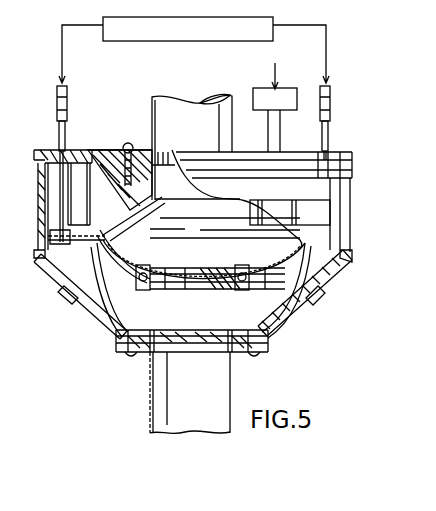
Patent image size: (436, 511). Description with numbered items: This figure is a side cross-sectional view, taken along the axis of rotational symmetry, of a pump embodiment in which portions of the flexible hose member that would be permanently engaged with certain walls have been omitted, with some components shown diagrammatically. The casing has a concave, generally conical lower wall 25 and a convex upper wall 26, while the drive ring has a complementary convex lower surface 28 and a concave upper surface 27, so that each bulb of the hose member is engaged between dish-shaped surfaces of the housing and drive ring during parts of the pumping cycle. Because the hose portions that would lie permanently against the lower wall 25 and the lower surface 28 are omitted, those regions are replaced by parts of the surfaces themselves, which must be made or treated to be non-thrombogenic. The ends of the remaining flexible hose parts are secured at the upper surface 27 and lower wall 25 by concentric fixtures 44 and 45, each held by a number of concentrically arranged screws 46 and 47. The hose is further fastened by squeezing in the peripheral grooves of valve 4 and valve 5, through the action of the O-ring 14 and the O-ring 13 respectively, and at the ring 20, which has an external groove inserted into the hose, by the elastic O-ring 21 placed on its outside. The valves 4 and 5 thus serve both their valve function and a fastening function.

The valve 4 is at (210, 282).
The valve 5 is at (170, 355).
The O-ring 13 is at (141, 353).
The O-ring 14 is at (147, 283).
The ring 20 is at (172, 150).
The O-ring 21 is at (152, 150).
The lower wall 25 is at (285, 309).
The upper wall 26 is at (112, 158).
The upper surface 27 is at (132, 266).
The lower surface 28 is at (102, 278).
The concentric fixture 44 is at (100, 246).
The concentric fixture 45 is at (88, 312).
The screws 46 is at (280, 253).
The screws 47 is at (70, 298).